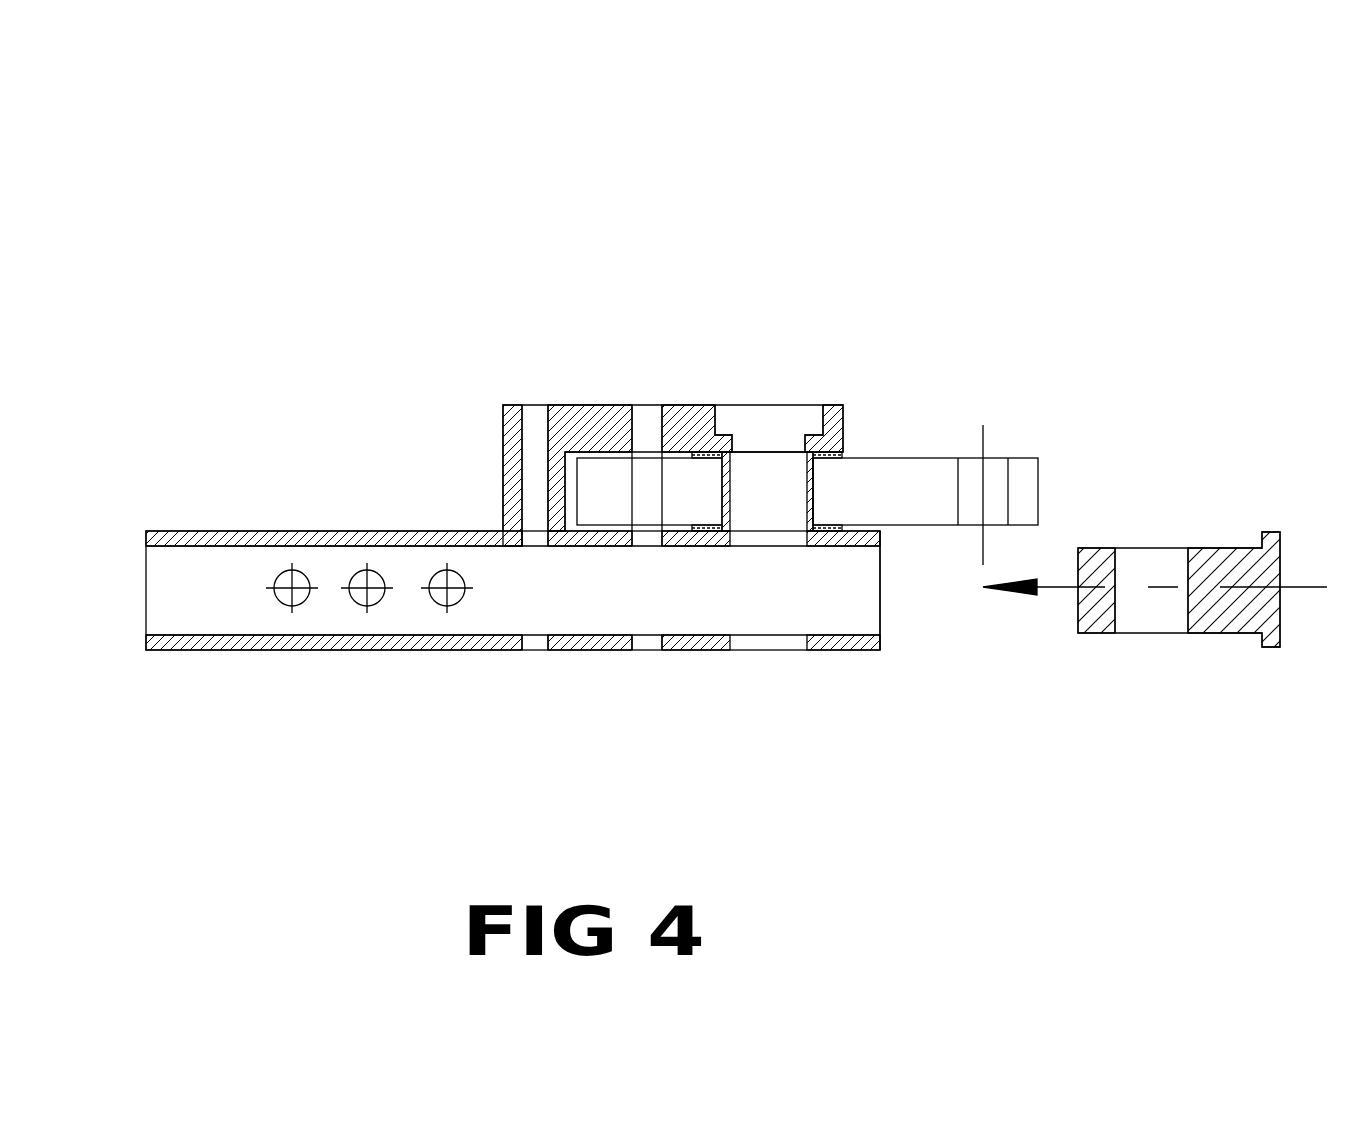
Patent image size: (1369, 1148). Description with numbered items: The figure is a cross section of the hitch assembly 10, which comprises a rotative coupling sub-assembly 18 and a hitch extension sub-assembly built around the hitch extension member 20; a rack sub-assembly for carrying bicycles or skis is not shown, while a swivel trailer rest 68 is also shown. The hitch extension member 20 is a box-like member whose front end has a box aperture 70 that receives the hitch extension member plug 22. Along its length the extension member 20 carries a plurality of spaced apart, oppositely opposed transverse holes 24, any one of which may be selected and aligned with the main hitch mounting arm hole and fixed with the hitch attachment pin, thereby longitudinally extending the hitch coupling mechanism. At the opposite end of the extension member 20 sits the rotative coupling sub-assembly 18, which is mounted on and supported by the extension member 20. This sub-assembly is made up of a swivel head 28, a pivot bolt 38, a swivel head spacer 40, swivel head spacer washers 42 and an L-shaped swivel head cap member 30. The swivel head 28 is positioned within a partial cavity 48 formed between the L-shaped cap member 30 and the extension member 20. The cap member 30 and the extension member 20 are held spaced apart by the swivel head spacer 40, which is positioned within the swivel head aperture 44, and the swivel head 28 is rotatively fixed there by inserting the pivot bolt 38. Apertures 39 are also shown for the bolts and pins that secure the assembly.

The hitch assembly 10 is at (655, 246).
The rotative coupling sub-assembly 18 is at (895, 527).
The hitch extension member 20 is at (303, 643).
The hitch extension member plug 22 is at (1098, 627).
The transverse holes 24 is at (343, 413).
The swivel head 28 is at (933, 503).
The L-shaped swivel head cap member 30 is at (572, 415).
The pivot bolt 38 is at (775, 418).
The apertures 39 is at (532, 407).
The swivel head spacer 40 is at (812, 507).
The swivel head spacer washers 42 is at (845, 455).
The swivel head aperture 44 is at (813, 487).
The partial cavity 48 is at (580, 455).
The swivel trailer rest 68 is at (1030, 488).
The box aperture 70 is at (642, 625).